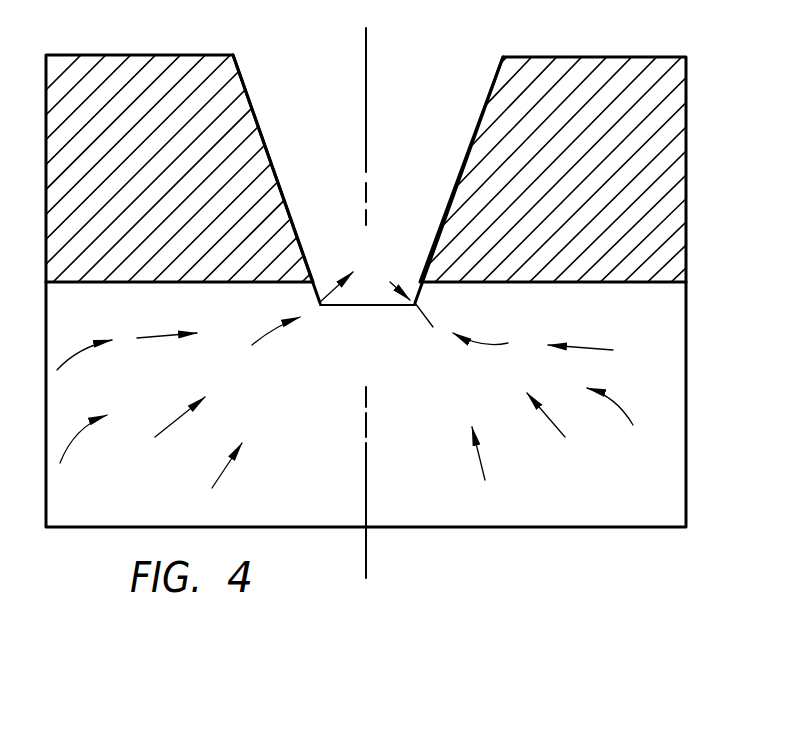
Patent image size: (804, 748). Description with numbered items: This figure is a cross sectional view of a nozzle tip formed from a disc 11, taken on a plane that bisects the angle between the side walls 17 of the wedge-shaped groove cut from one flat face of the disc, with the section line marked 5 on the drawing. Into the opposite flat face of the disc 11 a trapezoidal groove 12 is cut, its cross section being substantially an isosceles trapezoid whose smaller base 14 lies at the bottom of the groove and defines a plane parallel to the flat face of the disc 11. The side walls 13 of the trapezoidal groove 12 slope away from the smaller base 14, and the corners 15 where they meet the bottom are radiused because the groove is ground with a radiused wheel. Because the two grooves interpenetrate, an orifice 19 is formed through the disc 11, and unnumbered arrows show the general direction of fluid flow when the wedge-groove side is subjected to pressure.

The section line 5- 5 is at (383, 28).
The disc 11 is at (118, 62).
The trapezoidal groove 12 is at (437, 66).
The side walls 13 is at (265, 133).
The smaller base 14 is at (393, 307).
The corners 15 is at (320, 303).
The side walls 17 is at (590, 515).
The orifice 19 is at (372, 318).